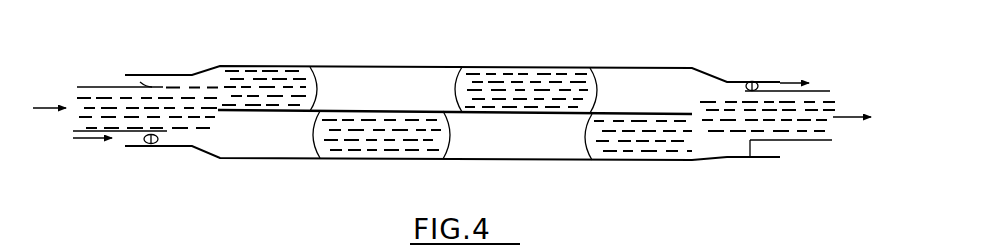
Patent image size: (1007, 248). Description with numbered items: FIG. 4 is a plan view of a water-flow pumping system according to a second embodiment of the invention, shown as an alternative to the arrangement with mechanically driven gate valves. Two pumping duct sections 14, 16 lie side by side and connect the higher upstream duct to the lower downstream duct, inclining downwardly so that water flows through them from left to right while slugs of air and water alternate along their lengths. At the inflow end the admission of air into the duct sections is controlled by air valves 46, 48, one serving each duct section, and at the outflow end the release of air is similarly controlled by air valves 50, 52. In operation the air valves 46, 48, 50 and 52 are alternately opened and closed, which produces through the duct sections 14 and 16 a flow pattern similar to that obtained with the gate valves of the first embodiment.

The pumping duct section 14 is at (397, 66).
The pumping duct section 16 is at (497, 161).
The air valve 46 is at (140, 82).
The air valve 48 is at (126, 146).
The air valve 50 is at (745, 85).
The air valve 52 is at (750, 140).